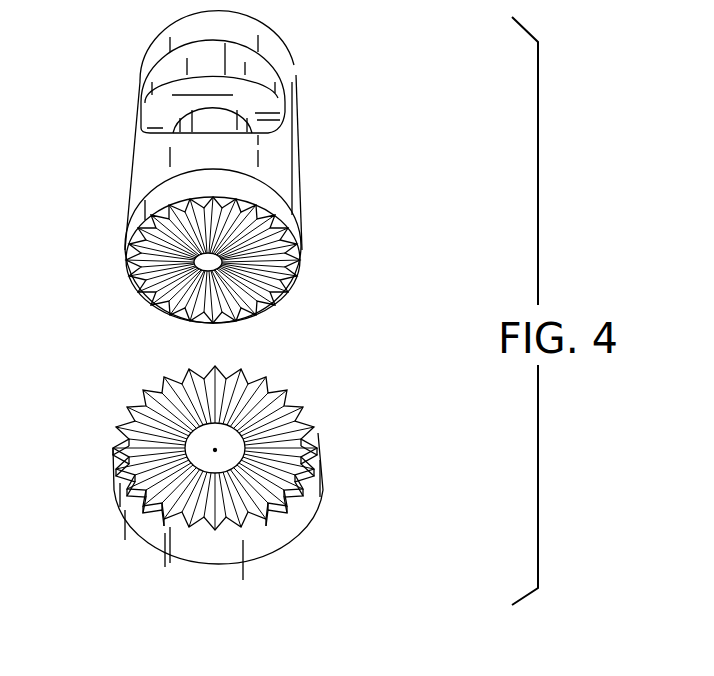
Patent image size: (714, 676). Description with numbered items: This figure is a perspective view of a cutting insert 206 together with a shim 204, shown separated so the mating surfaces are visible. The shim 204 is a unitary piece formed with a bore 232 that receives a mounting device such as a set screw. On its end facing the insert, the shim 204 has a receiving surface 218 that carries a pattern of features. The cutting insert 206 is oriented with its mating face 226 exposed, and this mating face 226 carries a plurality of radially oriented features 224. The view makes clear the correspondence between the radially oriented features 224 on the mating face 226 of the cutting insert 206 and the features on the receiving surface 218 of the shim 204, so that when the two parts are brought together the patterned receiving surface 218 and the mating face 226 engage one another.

The shim 204 is at (248, 167).
The cutting insert 206 is at (239, 459).
The receiving surface 218 is at (124, 252).
The radially oriented features 224 is at (163, 383).
The mating face 226 is at (134, 444).
The bore 232 is at (207, 120).